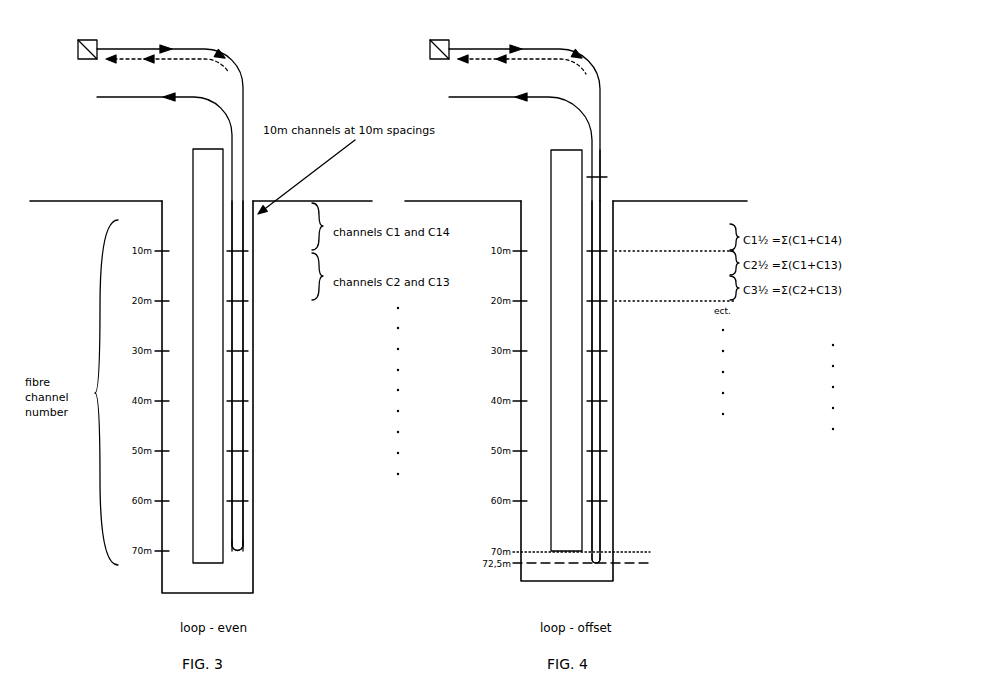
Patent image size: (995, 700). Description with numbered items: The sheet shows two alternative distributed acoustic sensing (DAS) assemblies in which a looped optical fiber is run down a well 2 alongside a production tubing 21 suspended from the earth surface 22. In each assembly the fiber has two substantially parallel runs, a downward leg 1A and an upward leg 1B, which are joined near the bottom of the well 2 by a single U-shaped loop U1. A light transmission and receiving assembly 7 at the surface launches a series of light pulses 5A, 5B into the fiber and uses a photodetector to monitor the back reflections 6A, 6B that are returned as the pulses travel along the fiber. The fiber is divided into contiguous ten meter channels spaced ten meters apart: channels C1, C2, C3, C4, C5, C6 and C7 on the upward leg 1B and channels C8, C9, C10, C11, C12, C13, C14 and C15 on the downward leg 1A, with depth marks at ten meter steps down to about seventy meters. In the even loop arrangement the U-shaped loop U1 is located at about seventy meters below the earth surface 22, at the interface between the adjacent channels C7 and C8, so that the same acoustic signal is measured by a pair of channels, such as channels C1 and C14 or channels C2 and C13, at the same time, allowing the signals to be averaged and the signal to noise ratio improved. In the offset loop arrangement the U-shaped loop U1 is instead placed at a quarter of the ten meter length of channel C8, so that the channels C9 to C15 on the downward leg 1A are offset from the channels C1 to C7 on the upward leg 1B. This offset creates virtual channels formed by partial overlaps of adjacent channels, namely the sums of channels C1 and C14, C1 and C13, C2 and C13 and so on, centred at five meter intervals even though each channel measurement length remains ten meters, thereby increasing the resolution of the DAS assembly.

In FIG. 3, the downward fiber leg 1A is at (118, 48).
In FIG. 4, the downward fiber leg 1A is at (535, 48).
In FIG. 3, the upward fiber leg 1B is at (118, 100).
In FIG. 4, the upward fiber leg 1B is at (487, 100).
In FIG. 3, the wellbore 2 is at (176, 204).
In FIG. 3, the light pulse 5A is at (200, 48).
In FIG. 4, the light pulse 5A is at (588, 60).
In FIG. 3, the light pulse 5B is at (152, 48).
In FIG. 4, the light pulse 5B is at (490, 48).
In FIG. 3, the back reflection 6A is at (137, 60).
In FIG. 4, the back reflection 6A is at (486, 60).
In FIG. 3, the back reflection 6B is at (168, 60).
In FIG. 4, the back reflection 6B is at (516, 60).
In FIG. 3, the light transmission and receiving assembly 7 is at (88, 62).
In FIG. 4, the light transmission and receiving assembly 7 is at (441, 62).
In FIG. 3, the production tubing 21 is at (193, 166).
In FIG. 4, the production tubing 21 is at (551, 172).
In FIG. 3, the earth surface 22 is at (93, 200).
In FIG. 4, the earth surface 22 is at (444, 200).
In FIG. 3, the channel C1 is at (232, 224).
In FIG. 4, the channel C1 is at (592, 224).
In FIG. 3, the channel C2 is at (232, 274).
In FIG. 4, the channel C2 is at (592, 274).
In FIG. 3, the channel C3 is at (232, 324).
In FIG. 4, the channel C3 is at (592, 324).
In FIG. 3, the channel C4 is at (232, 374).
In FIG. 4, the channel C4 is at (592, 374).
In FIG. 3, the channel C5 is at (232, 424).
In FIG. 4, the channel C5 is at (592, 424).
In FIG. 3, the channel C6 is at (232, 474).
In FIG. 4, the channel C6 is at (592, 474).
In FIG. 3, the channel C7 is at (232, 524).
In FIG. 4, the channel C7 is at (592, 524).
In FIG. 3, the channel C8 is at (245, 530).
In FIG. 4, the channel C8 is at (605, 543).
In FIG. 3, the channel C9 is at (245, 480).
In FIG. 4, the channel C9 is at (605, 499).
In FIG. 3, the channel C10 is at (245, 430).
In FIG. 4, the channel C10 is at (605, 451).
In FIG. 3, the channel C11 is at (245, 380).
In FIG. 4, the channel C11 is at (605, 396).
In FIG. 3, the channel C12 is at (245, 330).
In FIG. 4, the channel C12 is at (605, 353).
In FIG. 3, the channel C13 is at (245, 282).
In FIG. 4, the channel C13 is at (605, 293).
In FIG. 3, the channel C14 is at (245, 232).
In FIG. 4, the channel C14 is at (605, 243).
In FIG. 4, the channel C15 is at (606, 194).
In FIG. 3, the U-shaped loop U1 is at (238, 552).
In FIG. 4, the U-shaped loop U1 is at (597, 564).